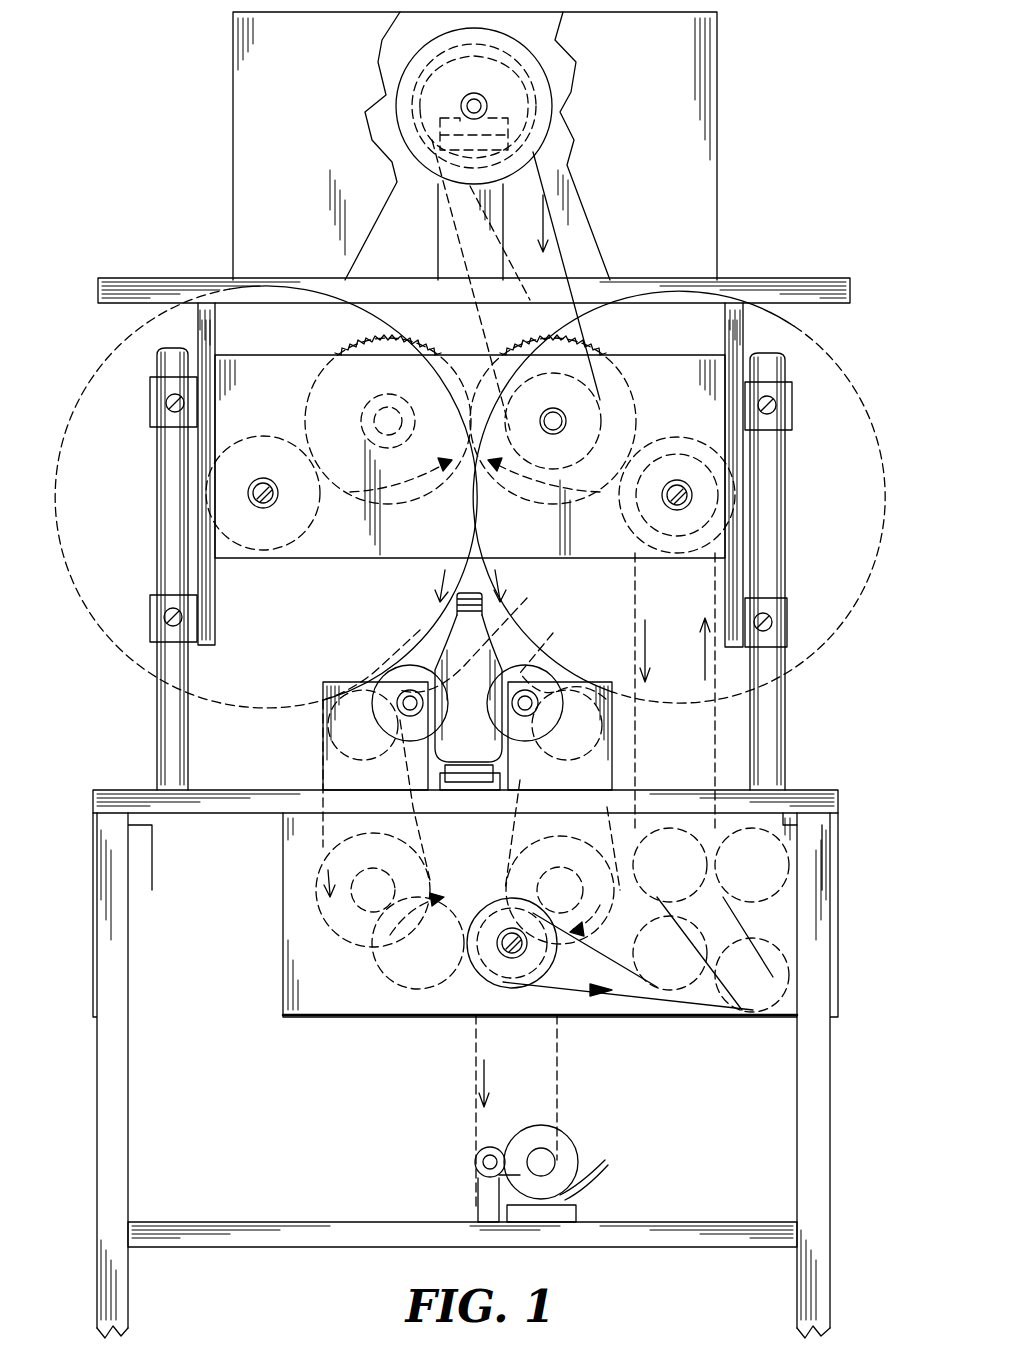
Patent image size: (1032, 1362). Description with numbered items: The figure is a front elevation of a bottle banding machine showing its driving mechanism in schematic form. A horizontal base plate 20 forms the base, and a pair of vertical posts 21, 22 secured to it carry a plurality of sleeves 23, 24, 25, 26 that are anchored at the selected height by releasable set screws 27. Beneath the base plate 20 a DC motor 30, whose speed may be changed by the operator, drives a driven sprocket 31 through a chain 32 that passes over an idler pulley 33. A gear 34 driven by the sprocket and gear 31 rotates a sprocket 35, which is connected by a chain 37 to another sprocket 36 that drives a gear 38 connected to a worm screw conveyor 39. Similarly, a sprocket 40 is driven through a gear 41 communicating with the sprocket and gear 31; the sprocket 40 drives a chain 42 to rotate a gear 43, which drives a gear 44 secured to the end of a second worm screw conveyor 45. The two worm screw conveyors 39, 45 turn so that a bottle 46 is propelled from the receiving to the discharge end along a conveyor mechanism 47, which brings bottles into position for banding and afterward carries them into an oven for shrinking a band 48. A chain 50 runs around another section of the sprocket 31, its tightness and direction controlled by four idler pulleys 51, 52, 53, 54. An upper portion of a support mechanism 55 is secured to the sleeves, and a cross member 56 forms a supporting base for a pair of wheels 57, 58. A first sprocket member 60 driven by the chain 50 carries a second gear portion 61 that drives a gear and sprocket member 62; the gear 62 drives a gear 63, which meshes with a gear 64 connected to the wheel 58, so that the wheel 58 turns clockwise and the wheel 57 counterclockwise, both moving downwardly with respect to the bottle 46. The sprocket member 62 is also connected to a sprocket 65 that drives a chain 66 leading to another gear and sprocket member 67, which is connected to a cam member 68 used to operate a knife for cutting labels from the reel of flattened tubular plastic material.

The horizontal base plate 20 is at (230, 790).
The post 21 is at (785, 722).
The post 22 is at (157, 722).
The sleeve 23 is at (792, 425).
The sleeve 24 is at (787, 603).
The sleeve 25 is at (150, 420).
The sleeve 26 is at (152, 595).
The set screws 27 is at (166, 402).
The DC motor 30 is at (560, 1128).
The driven sprocket 31 is at (500, 895).
The chain 32 is at (470, 1068).
The idler pulley 33 is at (475, 1166).
The gear 34 is at (398, 985).
The sprocket 35 is at (320, 852).
The sprocket 36 is at (330, 757).
The chain 37 is at (323, 830).
The gear 38 is at (385, 685).
The worm screw conveyor 39 is at (420, 630).
The sprocket 40 is at (515, 838).
The gear 41 is at (575, 868).
The chain 42 is at (535, 773).
The gear 43 is at (580, 692).
The gear 44 is at (545, 680).
The worm screw conveyor 45 is at (545, 640).
The bottle 46 is at (448, 652).
The conveyor mechanism 47 is at (445, 778).
The band 48 is at (516, 607).
The chain 50 is at (635, 586).
The idler pulley 51 is at (657, 965).
The idler pulley 52 is at (739, 987).
The idler pulley 53 is at (657, 877).
The idler pulley 54 is at (739, 877).
The support mechanism 55 is at (812, 278).
The cross member 56 is at (256, 358).
The wheel 57 is at (815, 655).
The wheel 58 is at (97, 622).
The first sprocket member 60 is at (690, 553).
The second gear portion 61 is at (690, 437).
The gear and sprocket member 62 is at (518, 352).
The gear 63 is at (422, 352).
The gear 64 is at (258, 437).
The sprocket 65 is at (558, 478).
The chain 66 is at (563, 255).
The gear and sprocket member 67 is at (500, 62).
The cam member 68 is at (412, 58).